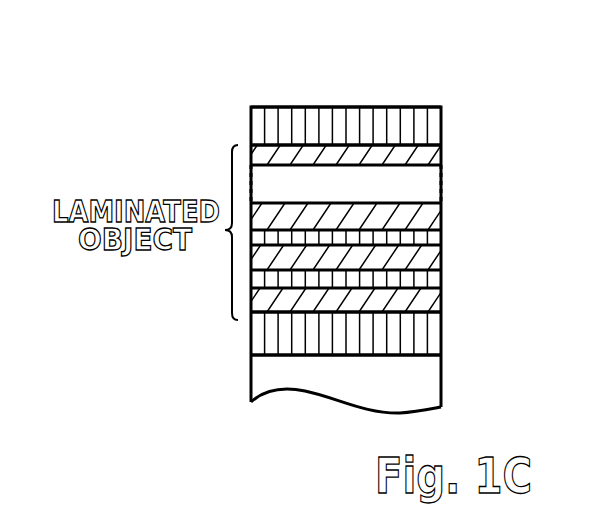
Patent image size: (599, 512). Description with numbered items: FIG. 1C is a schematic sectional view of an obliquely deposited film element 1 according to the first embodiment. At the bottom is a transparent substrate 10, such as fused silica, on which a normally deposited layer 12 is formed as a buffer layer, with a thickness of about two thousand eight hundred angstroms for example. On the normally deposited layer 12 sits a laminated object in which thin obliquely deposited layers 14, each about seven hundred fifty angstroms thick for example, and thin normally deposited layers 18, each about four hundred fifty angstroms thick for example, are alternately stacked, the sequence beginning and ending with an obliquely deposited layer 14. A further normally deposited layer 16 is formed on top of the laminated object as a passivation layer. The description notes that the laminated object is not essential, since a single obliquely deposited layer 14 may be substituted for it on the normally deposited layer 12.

The obliquely deposited film element 1 is at (436, 80).
The substrate 10 is at (432, 393).
The normally deposited layer 12 is at (432, 345).
The obliquely deposited layer 14 is at (432, 161).
The normally deposited layer 16 is at (432, 128).
The normally deposited layer 18 is at (432, 244).